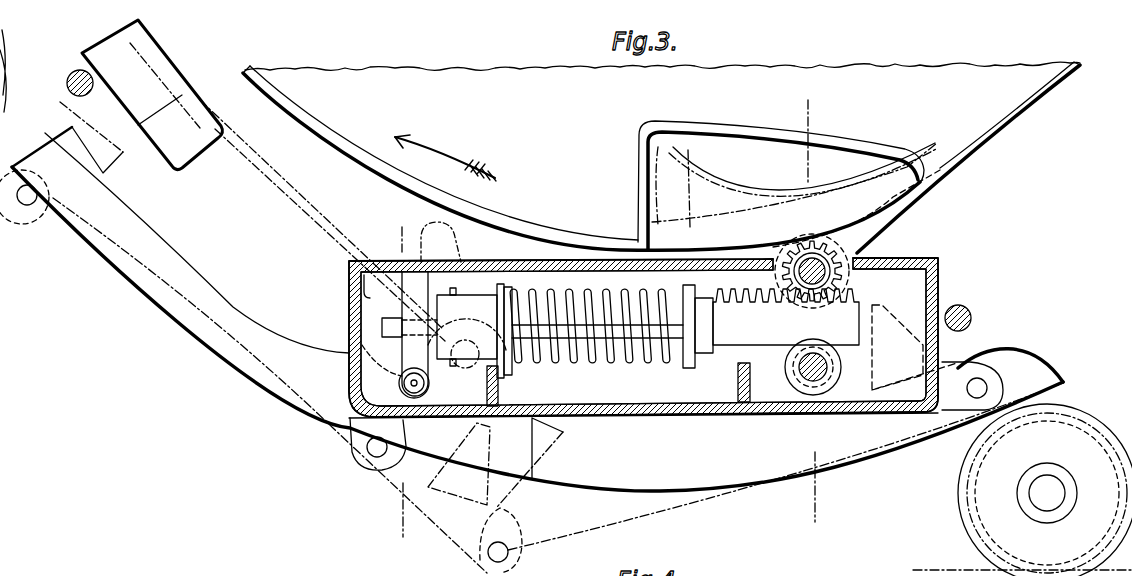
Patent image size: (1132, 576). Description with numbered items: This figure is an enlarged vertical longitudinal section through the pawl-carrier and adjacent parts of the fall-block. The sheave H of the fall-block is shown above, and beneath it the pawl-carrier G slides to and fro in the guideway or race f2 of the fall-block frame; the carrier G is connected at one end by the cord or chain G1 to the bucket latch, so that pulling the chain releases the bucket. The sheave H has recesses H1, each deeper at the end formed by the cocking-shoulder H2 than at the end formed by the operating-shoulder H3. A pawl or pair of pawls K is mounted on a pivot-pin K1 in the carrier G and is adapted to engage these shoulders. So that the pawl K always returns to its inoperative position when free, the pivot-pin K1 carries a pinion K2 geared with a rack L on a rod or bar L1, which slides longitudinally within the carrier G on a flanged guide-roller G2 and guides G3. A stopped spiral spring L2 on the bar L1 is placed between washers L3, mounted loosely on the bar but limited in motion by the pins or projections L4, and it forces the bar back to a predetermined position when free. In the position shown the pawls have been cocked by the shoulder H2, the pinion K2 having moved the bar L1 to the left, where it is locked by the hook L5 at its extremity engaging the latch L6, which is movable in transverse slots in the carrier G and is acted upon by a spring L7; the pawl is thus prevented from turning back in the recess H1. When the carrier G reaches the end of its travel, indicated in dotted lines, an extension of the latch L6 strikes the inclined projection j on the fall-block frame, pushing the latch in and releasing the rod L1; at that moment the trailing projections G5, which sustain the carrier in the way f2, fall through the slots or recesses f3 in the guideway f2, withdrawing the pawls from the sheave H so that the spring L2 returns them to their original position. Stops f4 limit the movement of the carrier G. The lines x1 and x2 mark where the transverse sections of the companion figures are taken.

The sheave H is at (581, 158).
The recesses H1 is at (796, 195).
The cocking-shoulders H2 is at (645, 204).
The operating-shoulders H3 is at (940, 153).
The pawl K is at (843, 250).
The pivot-pin K1 is at (812, 271).
The pinion K2 is at (845, 277).
The pawl-carrier G is at (633, 337).
The cord or chain G1 is at (1053, 411).
The flanged guide-roller G2 is at (838, 366).
The guides G3 is at (500, 387).
The trailing projections G5 is at (914, 347).
The rack L is at (786, 317).
The rod or bar L1 is at (597, 361).
The spiral spring L2 is at (590, 343).
The washers L3 is at (503, 285).
The pins or projections L4 is at (455, 289).
The hook L5 is at (382, 327).
The latch L6 is at (455, 295).
The spring L7 is at (372, 392).
The guideway or race f2 is at (255, 302).
The slots or recesses f3 is at (745, 478).
The stops f4 is at (68, 84).
The inclined projection j is at (195, 123).
The section line x' x' x1 is at (813, 314).
The section line x2 x2 is at (401, 383).